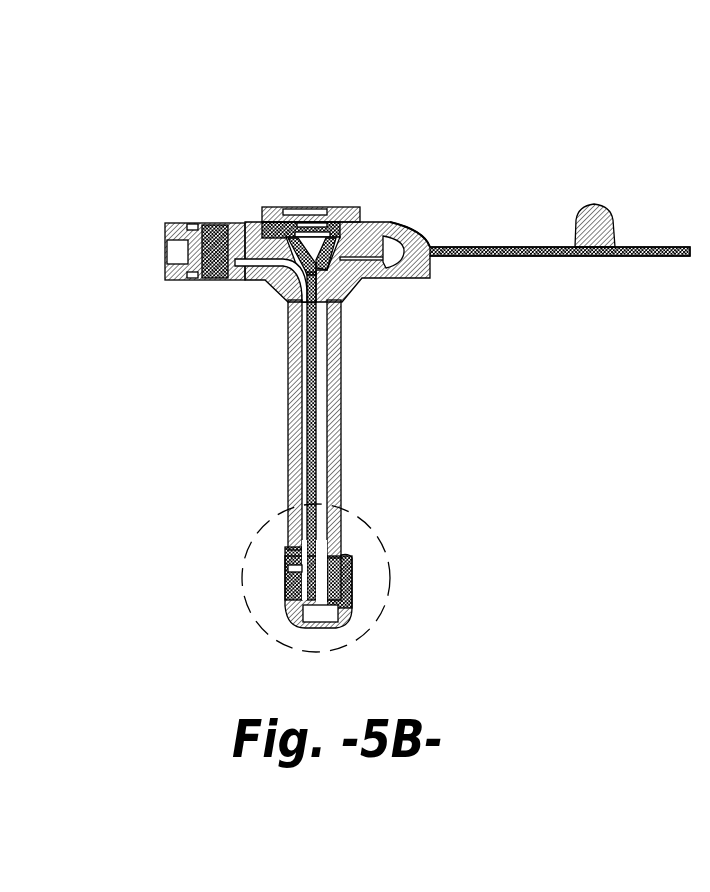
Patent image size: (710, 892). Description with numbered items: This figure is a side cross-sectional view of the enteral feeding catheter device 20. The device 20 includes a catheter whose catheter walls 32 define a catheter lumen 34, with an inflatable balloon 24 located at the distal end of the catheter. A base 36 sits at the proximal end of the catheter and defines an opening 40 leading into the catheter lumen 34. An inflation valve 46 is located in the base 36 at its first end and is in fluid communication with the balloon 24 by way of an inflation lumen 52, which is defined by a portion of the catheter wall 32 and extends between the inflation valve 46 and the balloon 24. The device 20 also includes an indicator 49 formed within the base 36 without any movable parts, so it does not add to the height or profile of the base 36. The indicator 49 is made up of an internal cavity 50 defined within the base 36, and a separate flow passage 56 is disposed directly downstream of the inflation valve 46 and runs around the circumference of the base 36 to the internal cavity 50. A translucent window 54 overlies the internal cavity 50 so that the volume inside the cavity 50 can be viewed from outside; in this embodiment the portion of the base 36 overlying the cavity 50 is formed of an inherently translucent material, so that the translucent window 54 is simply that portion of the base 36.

The enteral feeding catheter device 20 is at (418, 372).
The inflatable balloon 24 is at (283, 552).
The catheter walls 32 is at (342, 418).
The catheter lumen 34 is at (330, 343).
The base 36 is at (243, 222).
The opening 40 is at (309, 207).
The inflation valve 46 is at (218, 224).
The indicator 49 is at (440, 218).
The internal cavity 50 is at (395, 262).
The inflation lumen 52 is at (296, 362).
The translucent window 54 is at (421, 223).
The flow passage 56 is at (264, 263).